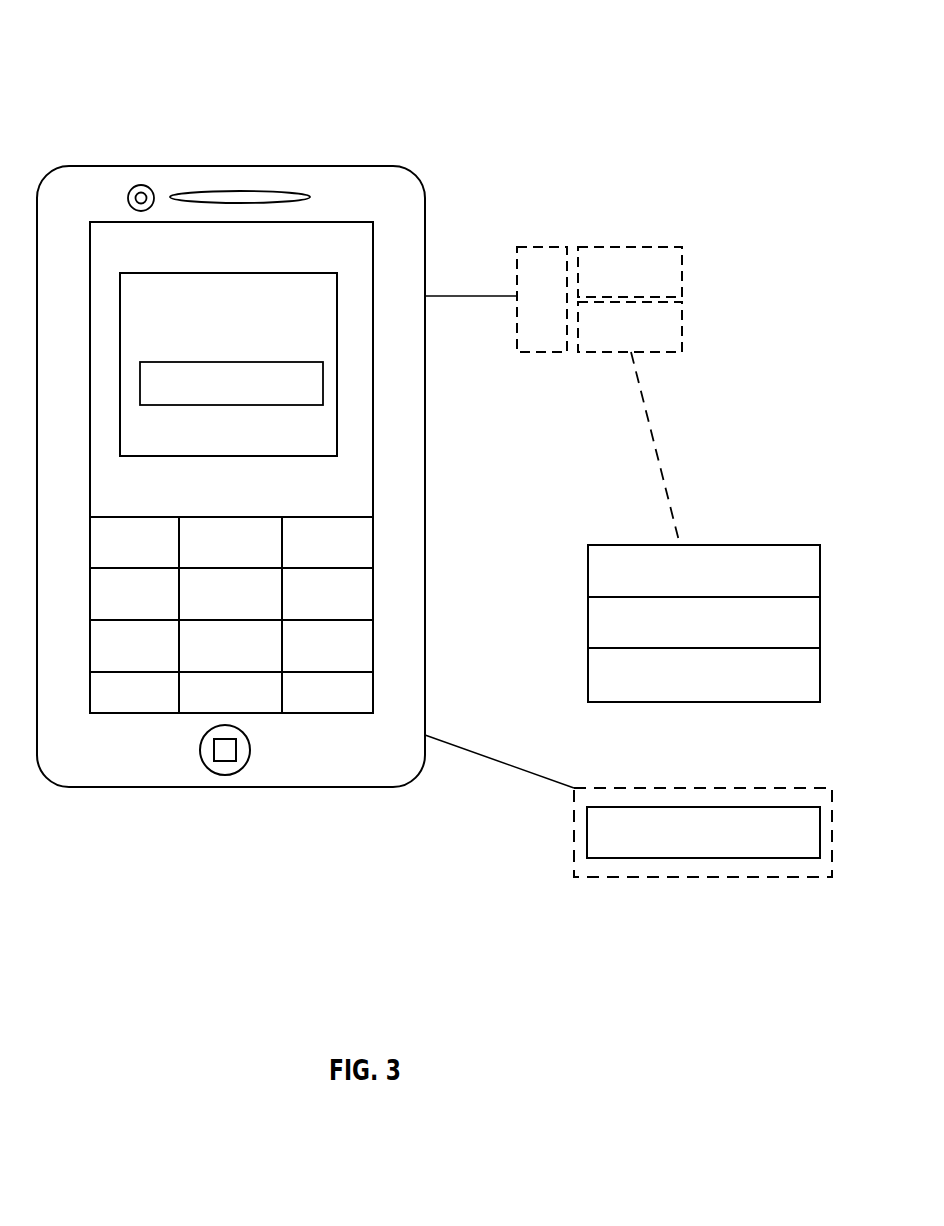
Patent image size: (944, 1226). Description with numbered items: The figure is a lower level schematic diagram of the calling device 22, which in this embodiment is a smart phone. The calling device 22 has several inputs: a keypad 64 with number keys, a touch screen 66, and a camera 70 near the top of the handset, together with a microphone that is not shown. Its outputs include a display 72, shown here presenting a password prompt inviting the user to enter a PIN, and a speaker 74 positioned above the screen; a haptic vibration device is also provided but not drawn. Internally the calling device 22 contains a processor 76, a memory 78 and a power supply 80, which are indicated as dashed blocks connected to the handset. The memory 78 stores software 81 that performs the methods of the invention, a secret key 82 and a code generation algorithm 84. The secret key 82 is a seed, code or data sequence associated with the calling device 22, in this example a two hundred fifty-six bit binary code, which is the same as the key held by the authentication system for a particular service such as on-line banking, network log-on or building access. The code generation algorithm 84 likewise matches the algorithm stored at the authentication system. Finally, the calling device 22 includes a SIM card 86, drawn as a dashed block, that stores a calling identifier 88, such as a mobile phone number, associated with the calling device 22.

The calling device 22 is at (291, 90).
The camera 70 is at (140, 185).
The speaker 74 is at (287, 190).
The display 72 is at (337, 323).
The touch screen 66 is at (357, 452).
The keypad 64 is at (373, 608).
The processor 76 is at (682, 268).
The memory 78 is at (682, 322).
The power supply 80 is at (538, 352).
The software 81 is at (588, 570).
The secret key 82 is at (588, 622).
The code generation algorithm 84 is at (588, 673).
The SIM card 86 is at (657, 877).
The calling identifier 88 is at (587, 843).